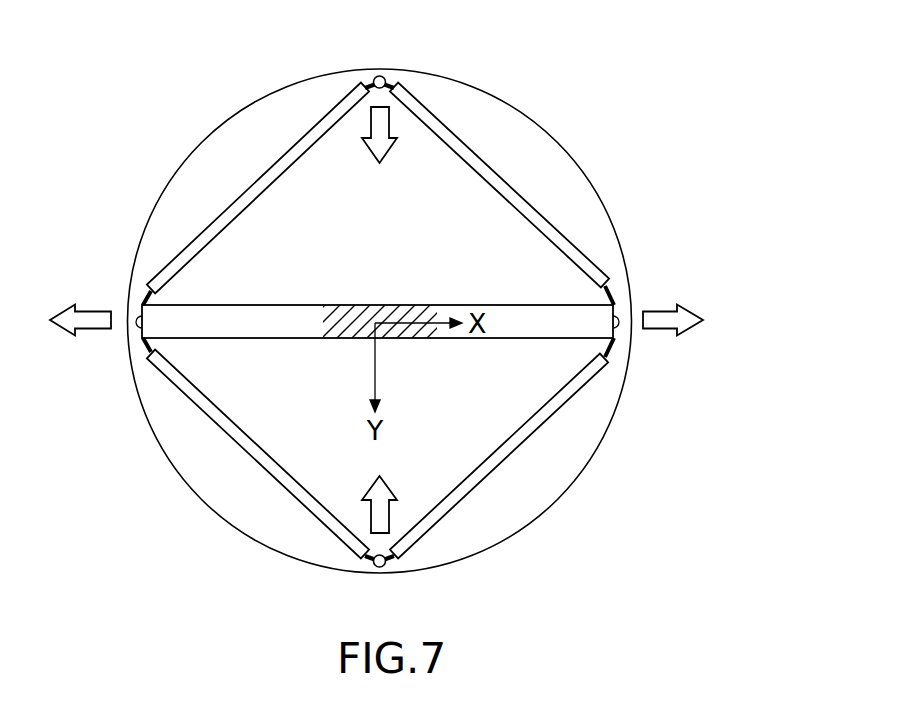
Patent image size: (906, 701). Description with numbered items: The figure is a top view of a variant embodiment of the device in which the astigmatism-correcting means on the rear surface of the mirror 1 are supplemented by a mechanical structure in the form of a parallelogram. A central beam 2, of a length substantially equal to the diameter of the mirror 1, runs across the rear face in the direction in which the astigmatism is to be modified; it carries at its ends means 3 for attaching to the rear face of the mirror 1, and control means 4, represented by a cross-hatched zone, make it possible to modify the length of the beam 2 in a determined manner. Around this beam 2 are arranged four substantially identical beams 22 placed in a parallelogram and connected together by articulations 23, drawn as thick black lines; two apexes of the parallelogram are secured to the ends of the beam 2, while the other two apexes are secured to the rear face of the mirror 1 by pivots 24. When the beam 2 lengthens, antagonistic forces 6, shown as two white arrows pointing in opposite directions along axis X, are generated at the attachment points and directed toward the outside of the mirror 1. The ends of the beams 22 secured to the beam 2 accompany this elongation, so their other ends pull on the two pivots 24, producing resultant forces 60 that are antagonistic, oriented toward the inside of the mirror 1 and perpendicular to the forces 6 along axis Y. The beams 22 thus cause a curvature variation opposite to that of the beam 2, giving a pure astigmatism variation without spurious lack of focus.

The mirror 1 is at (528, 525).
The beam 2 is at (265, 322).
The means for attaching 3 is at (136, 333).
The control means 4 is at (397, 310).
The antagonistic forces 6 is at (376, 305).
The beams 22 is at (243, 440).
The articulations 23 is at (151, 291).
The pivots 24 is at (376, 77).
The resultant forces 60 is at (379, 320).